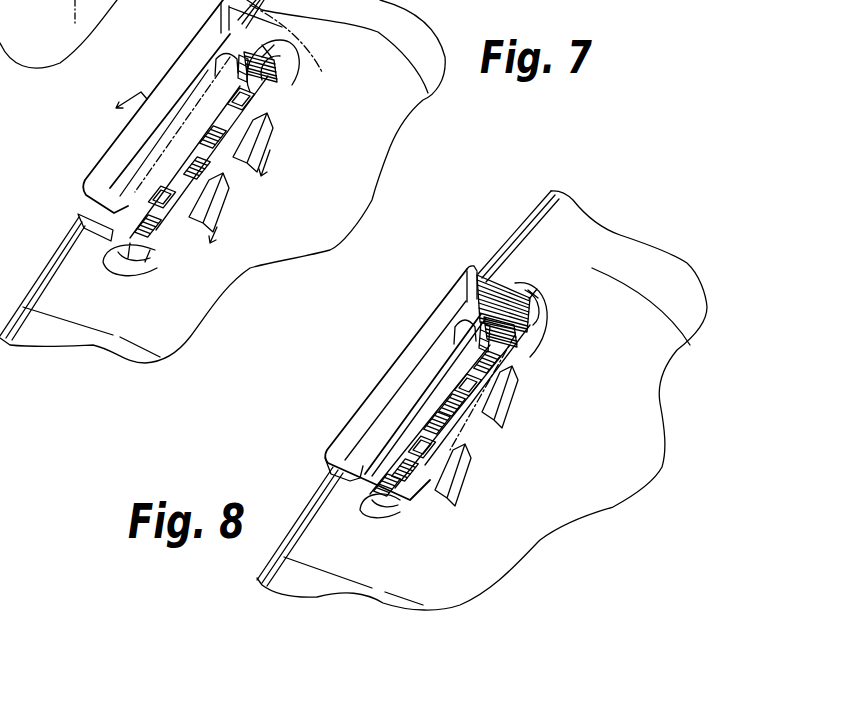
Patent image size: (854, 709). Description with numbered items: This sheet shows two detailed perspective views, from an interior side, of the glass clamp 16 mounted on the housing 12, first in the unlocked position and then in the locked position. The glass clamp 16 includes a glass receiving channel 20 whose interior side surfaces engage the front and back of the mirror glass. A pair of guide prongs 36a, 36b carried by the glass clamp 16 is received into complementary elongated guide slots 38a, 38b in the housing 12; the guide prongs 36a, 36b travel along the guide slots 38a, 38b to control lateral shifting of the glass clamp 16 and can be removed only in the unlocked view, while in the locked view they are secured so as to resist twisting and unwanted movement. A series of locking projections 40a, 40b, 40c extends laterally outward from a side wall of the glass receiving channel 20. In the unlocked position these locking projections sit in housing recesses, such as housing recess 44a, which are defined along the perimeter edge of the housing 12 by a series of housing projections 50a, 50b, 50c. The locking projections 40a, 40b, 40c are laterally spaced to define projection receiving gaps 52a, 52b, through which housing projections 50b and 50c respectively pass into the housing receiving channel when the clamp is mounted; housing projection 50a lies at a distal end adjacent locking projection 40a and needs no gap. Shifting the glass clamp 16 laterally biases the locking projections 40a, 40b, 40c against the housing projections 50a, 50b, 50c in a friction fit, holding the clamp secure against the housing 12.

In FIG. 7, the housing 12 is at (440, 30).
In FIG. 8, the housing 12 is at (687, 263).
In FIG. 7, the glass clamp 16 is at (180, 53).
In FIG. 8, the glass clamp 16 is at (428, 318).
In FIG. 7, the glass receiving channel 20 is at (103, 211).
In FIG. 8, the glass receiving channel 20 is at (342, 468).
In FIG. 7, the guide prong 36a is at (266, 150).
In FIG. 8, the guide prong 36a is at (518, 408).
In FIG. 7, the guide prong 36b is at (230, 222).
In FIG. 8, the guide prong 36b is at (462, 470).
In FIG. 7, the guide slot 38a is at (266, 110).
In FIG. 8, the guide slot 38a is at (528, 360).
In FIG. 7, the guide slot 38b is at (200, 228).
In FIG. 8, the guide slot 38b is at (497, 420).
In FIG. 7, the locking projection 40a is at (160, 230).
In FIG. 8, the locking projection 40a is at (418, 495).
In FIG. 7, the locking projection 40b is at (214, 190).
In FIG. 8, the locking projection 40b is at (465, 428).
In FIG. 7, the locking projection 40c is at (307, 48).
In FIG. 8, the locking projection 40c is at (540, 328).
In FIG. 7, the housing recess 44a is at (58, 34).
In FIG. 8, the housing projection 50a is at (420, 482).
In FIG. 8, the housing projection 50b is at (480, 420).
In FIG. 8, the housing projection 50c is at (528, 332).
In FIG. 7, the projection receiving gap 52a is at (170, 212).
In FIG. 7, the projection receiving gap 52b is at (243, 170).